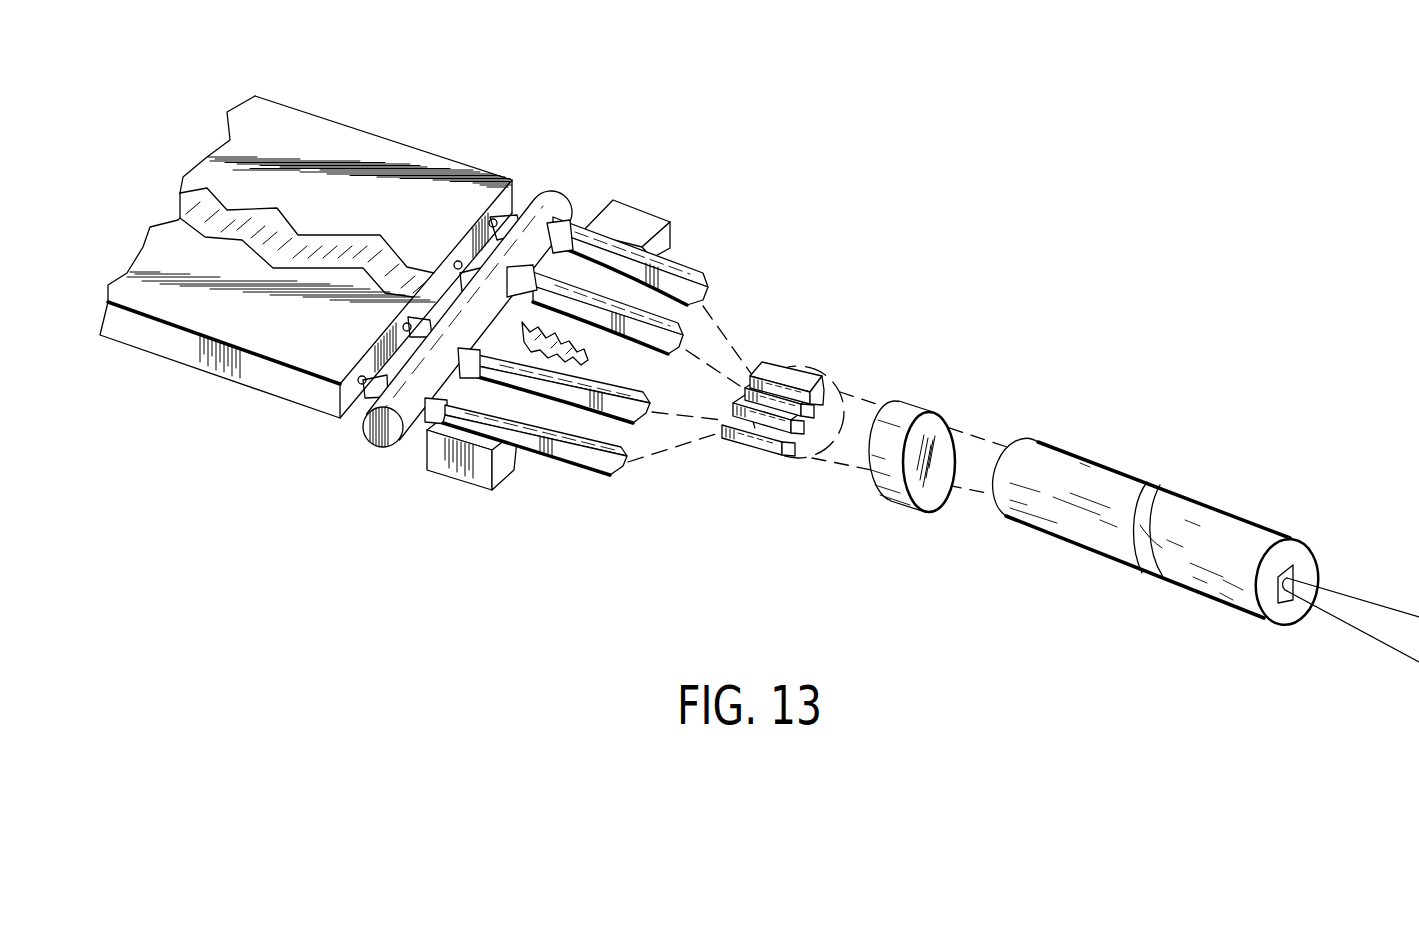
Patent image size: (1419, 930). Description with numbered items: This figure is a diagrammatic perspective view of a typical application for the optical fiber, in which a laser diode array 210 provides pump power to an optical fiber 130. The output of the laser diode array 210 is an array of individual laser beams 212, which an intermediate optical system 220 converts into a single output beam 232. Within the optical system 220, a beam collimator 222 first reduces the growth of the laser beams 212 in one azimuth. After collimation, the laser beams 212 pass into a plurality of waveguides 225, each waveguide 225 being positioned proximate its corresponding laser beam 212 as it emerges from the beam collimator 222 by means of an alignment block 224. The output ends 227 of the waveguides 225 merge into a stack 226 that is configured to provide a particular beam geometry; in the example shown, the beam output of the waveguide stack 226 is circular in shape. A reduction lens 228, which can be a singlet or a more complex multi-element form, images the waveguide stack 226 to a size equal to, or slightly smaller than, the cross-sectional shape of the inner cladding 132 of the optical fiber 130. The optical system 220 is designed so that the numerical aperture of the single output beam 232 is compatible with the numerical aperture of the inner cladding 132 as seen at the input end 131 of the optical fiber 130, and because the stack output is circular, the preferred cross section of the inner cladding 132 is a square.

The laser diode array 210 is at (311, 269).
The laser beams 212 is at (352, 395).
The intermediate optical system 220 is at (1060, 372).
The beam collimator 222 is at (386, 449).
The alignment block 224 is at (493, 486).
The waveguides 225 is at (600, 476).
The stack 226 is at (762, 455).
The output ends 227 is at (840, 387).
The reduction lens 228 is at (900, 508).
The single output beam 232 is at (982, 436).
The optical fiber 130 is at (1206, 550).
The input end 131 is at (1000, 509).
The inner cladding 132 is at (1300, 564).